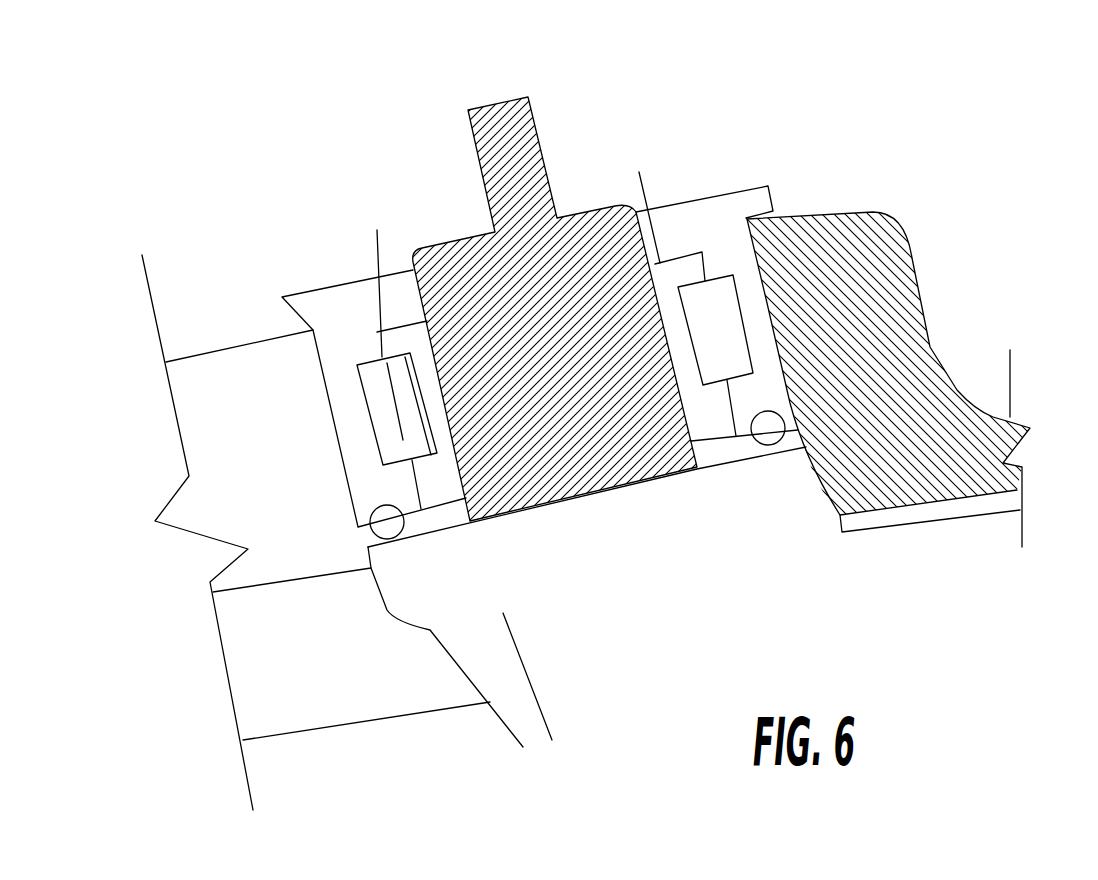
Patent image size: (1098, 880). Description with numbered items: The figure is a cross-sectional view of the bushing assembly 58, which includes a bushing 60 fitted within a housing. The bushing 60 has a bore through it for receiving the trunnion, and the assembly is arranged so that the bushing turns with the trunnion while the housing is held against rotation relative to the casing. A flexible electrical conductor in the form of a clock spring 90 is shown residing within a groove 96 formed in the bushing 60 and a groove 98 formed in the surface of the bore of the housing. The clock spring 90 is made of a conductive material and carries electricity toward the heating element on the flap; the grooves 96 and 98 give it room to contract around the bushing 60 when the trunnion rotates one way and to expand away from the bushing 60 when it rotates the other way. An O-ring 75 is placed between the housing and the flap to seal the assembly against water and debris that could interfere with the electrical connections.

The bushing assembly 58 is at (292, 278).
The bushing 60 is at (639, 172).
The O-ring 75 is at (387, 522).
The clock spring 90 is at (377, 232).
The groove 96 is at (705, 281).
The groove 98 is at (767, 297).